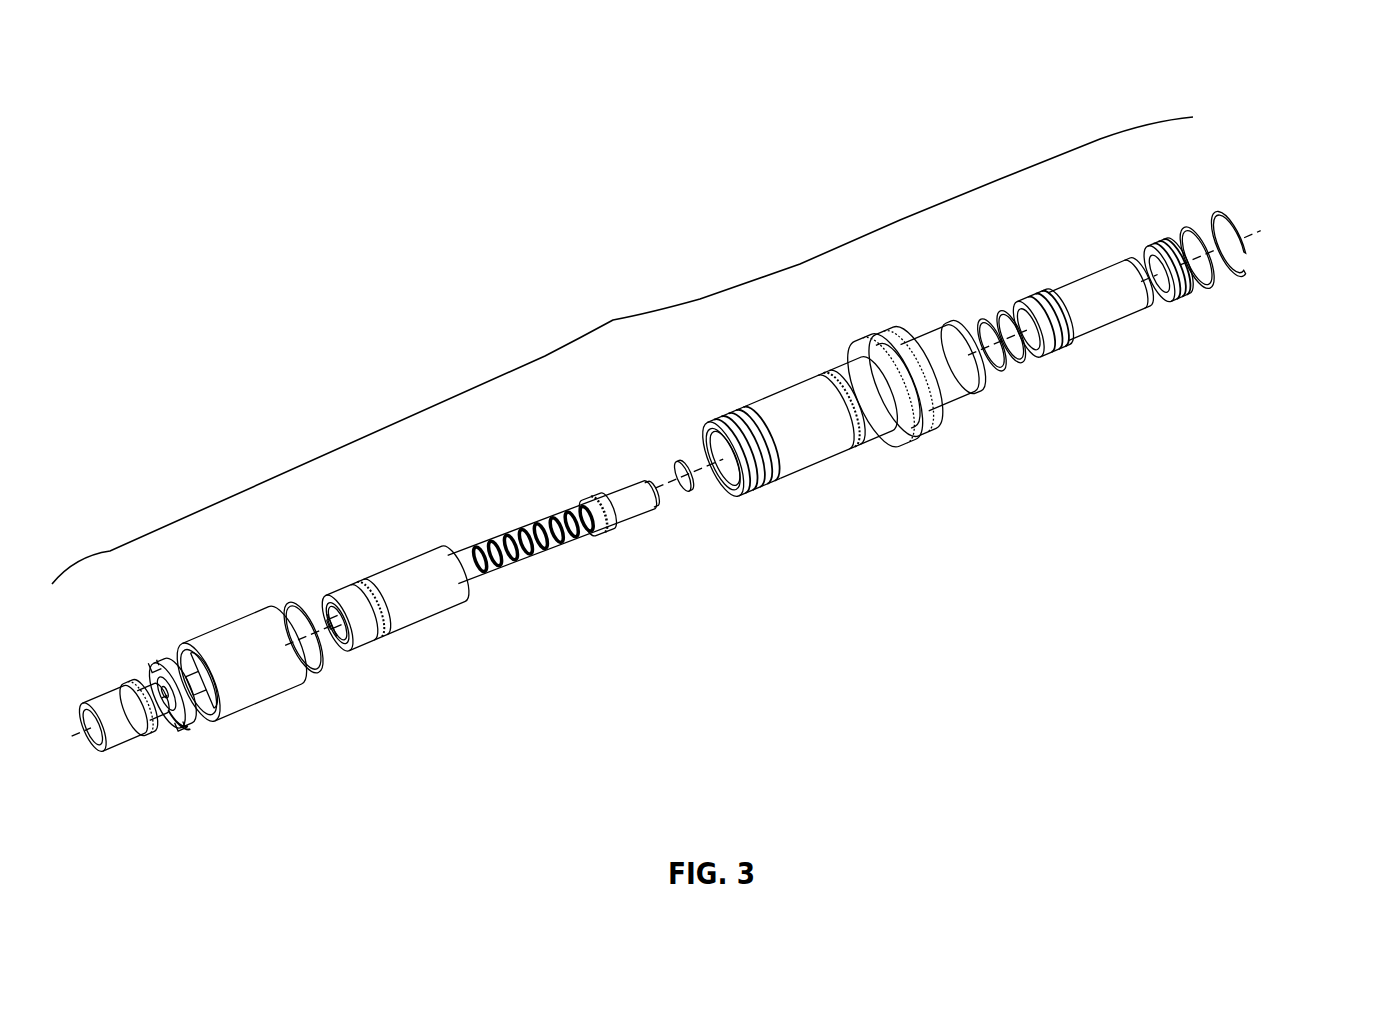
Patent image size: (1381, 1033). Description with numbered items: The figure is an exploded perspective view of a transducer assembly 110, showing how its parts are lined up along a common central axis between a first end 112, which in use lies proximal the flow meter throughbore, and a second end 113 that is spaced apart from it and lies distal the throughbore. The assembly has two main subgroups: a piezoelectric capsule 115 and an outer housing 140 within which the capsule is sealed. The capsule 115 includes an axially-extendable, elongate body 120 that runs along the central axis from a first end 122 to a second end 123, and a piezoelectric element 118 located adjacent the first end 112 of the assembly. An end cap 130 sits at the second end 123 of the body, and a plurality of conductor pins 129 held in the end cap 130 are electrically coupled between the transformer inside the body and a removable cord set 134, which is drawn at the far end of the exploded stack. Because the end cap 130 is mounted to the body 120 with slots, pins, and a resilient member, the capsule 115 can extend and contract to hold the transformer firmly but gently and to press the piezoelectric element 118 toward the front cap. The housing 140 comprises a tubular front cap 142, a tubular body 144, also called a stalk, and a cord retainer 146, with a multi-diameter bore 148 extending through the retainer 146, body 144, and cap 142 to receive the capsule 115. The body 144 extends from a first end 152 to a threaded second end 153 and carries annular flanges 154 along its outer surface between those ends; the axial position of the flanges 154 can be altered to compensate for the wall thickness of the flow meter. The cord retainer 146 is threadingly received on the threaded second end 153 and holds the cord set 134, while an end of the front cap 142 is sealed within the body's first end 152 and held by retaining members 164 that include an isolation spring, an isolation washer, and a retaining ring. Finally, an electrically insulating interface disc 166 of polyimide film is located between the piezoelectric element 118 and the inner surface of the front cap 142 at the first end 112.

The transducer assembly 110 is at (622, 350).
The first end 112 is at (1154, 297).
The second end 113 is at (177, 658).
The piezoelectric capsule 115 is at (557, 497).
The piezoelectric element 118 is at (642, 478).
The elongate body 120 is at (530, 520).
The first end 122 is at (658, 512).
The second end 123 is at (389, 604).
The conductor pins 129 is at (333, 657).
The end cap 130 is at (338, 605).
The cord set 134 is at (123, 745).
The housing 140 is at (1280, 123).
The front cap 142 is at (1090, 284).
The tubular body 144 is at (845, 422).
The cord retainer 146 is at (237, 632).
The multi-diameter bore 148 is at (187, 727).
The first end 152 is at (984, 379).
The threaded second end 153 is at (746, 495).
The annular flanges 154 is at (929, 417).
The retaining members 164 is at (1182, 310).
The interface disc 166 is at (689, 493).